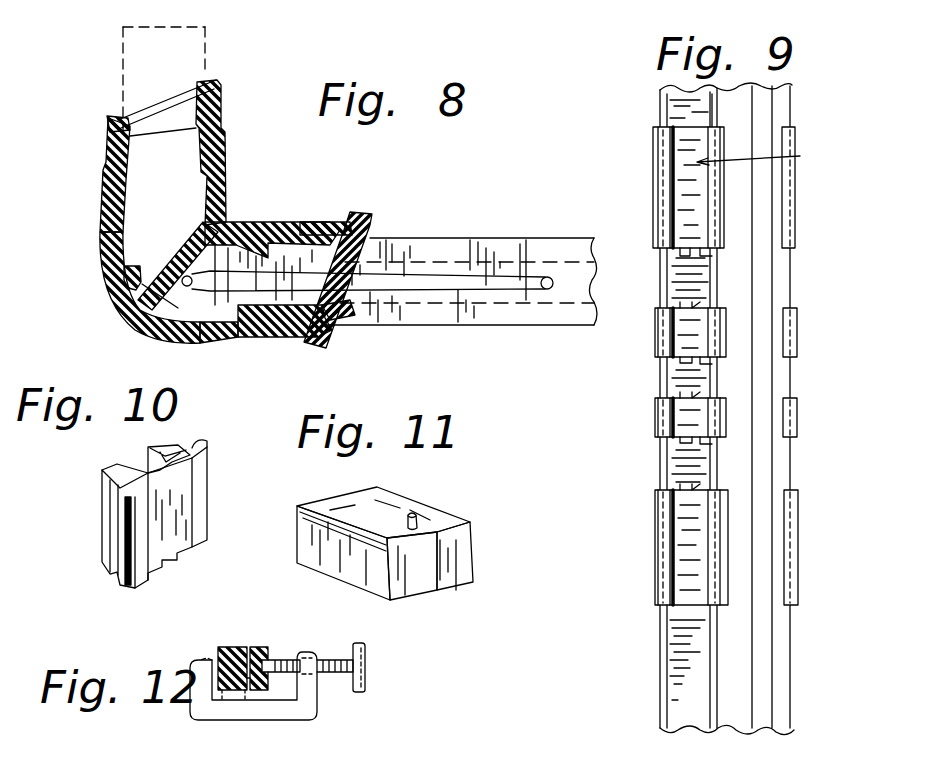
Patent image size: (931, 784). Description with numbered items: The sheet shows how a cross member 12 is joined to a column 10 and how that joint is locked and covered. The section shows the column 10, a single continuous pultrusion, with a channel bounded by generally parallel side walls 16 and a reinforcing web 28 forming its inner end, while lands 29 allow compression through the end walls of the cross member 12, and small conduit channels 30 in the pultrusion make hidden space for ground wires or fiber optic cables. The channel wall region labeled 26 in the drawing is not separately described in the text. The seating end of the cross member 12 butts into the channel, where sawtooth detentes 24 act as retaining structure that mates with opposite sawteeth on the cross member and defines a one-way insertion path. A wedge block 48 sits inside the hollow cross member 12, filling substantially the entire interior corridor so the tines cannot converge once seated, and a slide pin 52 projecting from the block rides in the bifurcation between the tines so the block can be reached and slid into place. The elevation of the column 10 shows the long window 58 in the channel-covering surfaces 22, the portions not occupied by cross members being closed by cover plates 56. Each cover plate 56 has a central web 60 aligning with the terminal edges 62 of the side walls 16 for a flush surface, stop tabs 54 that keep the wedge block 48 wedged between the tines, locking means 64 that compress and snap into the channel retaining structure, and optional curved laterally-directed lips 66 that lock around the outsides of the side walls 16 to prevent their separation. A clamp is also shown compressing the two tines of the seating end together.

In FIG. 8, the column 10 is at (122, 330).
In FIG. 9, the column 10 is at (654, 650).
In FIG. 8, the cross member 12 is at (210, 30).
In FIG. 8, the side walls 16 is at (128, 187).
In FIG. 9, the channel-covering surfaces 22 is at (800, 92).
In FIG. 8, the sawtooth detentes 24 is at (200, 140).
In FIG. 8, the channel wall 26 is at (103, 200).
In FIG. 9, the channel wall 26 is at (755, 292).
In FIG. 8, the reinforcing web 28 is at (180, 268).
In FIG. 8, the lands 29 is at (100, 243).
In FIG. 8, the conduit channels 30 is at (140, 298).
In FIG. 11, the wedge block 48 is at (309, 587).
In FIG. 12, the wedge block 48 is at (266, 681).
In FIG. 8, the slide pin 52 is at (187, 335).
In FIG. 11, the slide pin 52 is at (420, 522).
In FIG. 10, the stop tabs 54 is at (170, 468).
In FIG. 9, the cover plate 56 is at (800, 187).
In FIG. 10, the cover plate 56 is at (124, 600).
In FIG. 8, the long window 58 is at (165, 112).
In FIG. 9, the long window 58 is at (672, 276).
In FIG. 10, the central web 60 is at (160, 565).
In FIG. 8, the terminal edges 62 is at (222, 84).
In FIG. 8, the locking means 64 is at (248, 337).
In FIG. 10, the locking means 64 is at (148, 457).
In FIG. 8, the curved laterally-directed lips 66 is at (367, 212).
In FIG. 10, the curved laterally-directed lips 66 is at (205, 442).